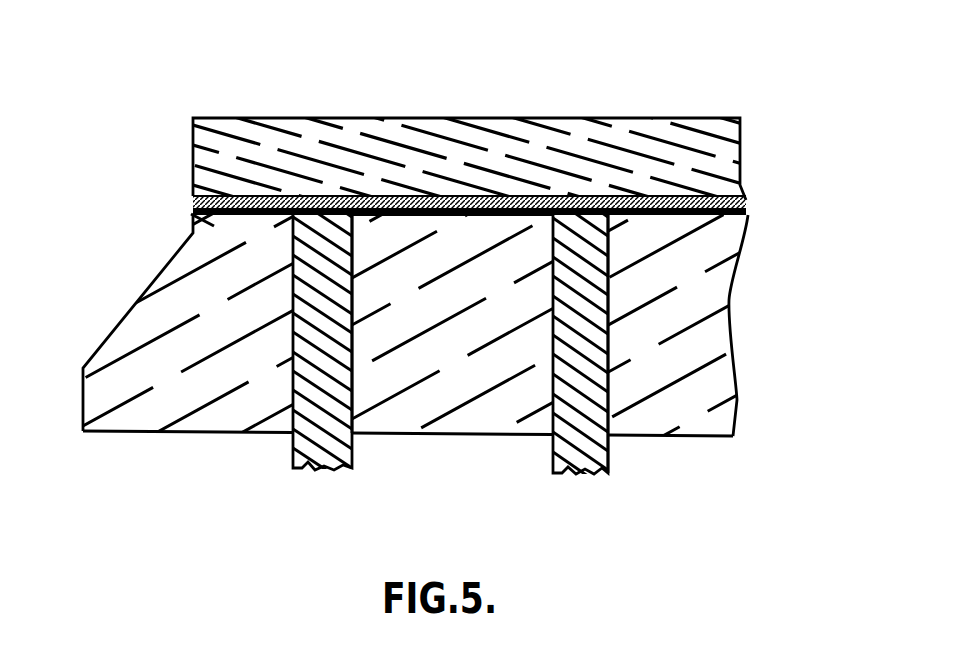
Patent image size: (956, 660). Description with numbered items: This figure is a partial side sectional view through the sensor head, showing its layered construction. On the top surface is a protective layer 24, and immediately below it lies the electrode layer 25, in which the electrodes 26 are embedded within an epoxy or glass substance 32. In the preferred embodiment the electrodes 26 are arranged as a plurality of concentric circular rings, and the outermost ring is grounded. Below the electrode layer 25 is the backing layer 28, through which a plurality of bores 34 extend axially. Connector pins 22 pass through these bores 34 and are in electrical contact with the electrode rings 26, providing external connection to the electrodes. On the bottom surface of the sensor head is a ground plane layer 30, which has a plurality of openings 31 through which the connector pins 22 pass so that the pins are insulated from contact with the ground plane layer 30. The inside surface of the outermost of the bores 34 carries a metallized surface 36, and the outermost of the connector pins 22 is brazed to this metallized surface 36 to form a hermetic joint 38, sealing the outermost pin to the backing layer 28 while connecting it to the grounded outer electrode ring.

The connector pins 22 is at (292, 461).
The protective layer 24 is at (230, 146).
The electrode layer 25 is at (193, 208).
The electrodes 26 is at (359, 199).
The backing layer 28 is at (183, 371).
The ground plane layer 30 is at (438, 428).
The openings 31 is at (627, 438).
The epoxy or glass substance 32 is at (420, 215).
The bores 34 is at (353, 239).
The metallized surface 36 is at (355, 327).
The hermetic joint 38 is at (355, 396).